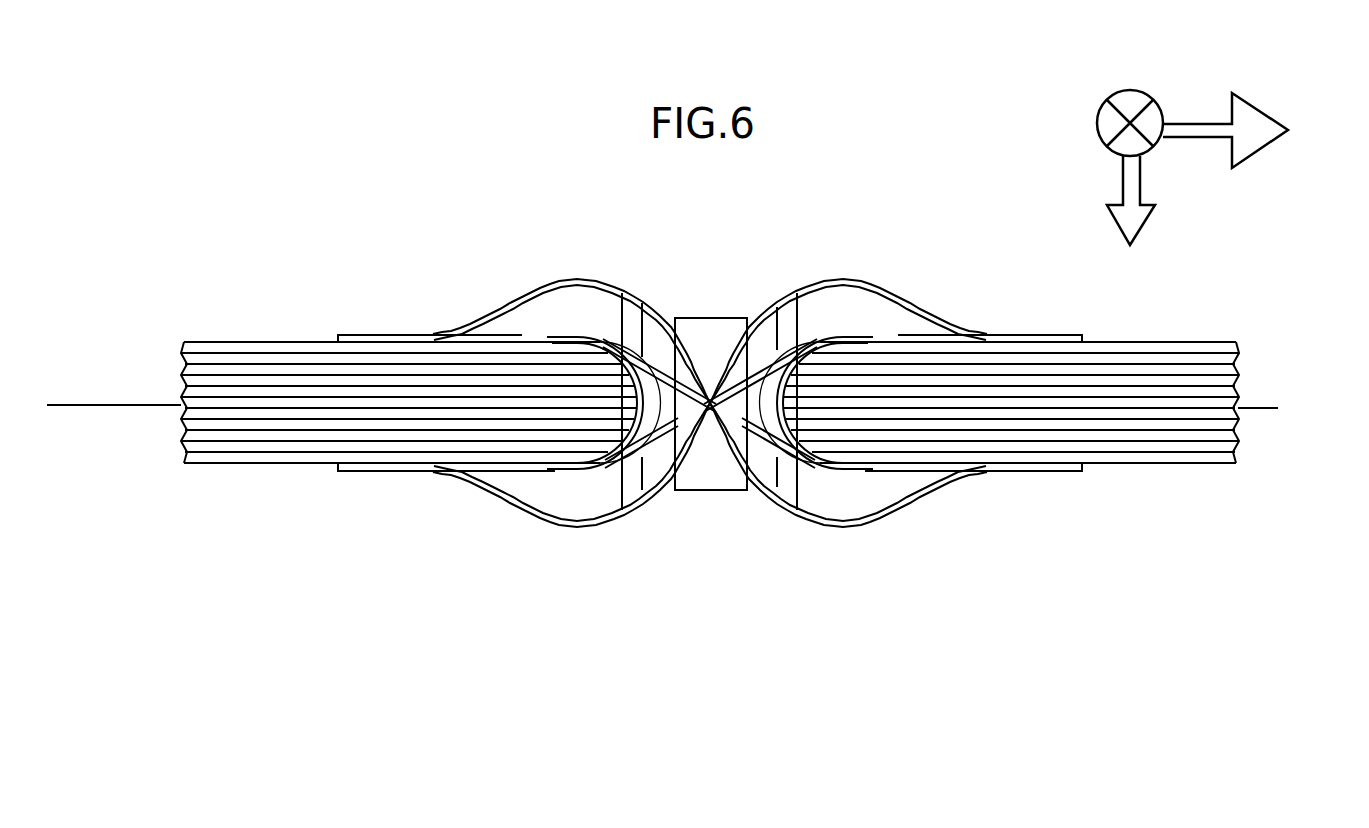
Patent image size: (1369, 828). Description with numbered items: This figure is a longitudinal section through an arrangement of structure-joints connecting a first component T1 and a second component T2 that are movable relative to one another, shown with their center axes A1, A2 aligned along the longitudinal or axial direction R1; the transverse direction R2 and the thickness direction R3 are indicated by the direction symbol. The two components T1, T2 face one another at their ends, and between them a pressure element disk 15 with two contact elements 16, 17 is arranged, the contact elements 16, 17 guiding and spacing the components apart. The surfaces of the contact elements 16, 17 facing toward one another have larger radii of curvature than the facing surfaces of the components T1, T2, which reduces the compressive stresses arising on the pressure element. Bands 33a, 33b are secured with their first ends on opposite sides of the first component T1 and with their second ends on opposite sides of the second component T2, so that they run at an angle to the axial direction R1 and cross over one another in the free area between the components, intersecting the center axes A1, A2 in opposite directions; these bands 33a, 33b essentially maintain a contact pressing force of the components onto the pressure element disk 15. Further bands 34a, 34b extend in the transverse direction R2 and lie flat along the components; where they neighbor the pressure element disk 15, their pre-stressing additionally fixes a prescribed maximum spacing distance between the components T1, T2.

The pressure element disk 15 is at (702, 343).
The contact element 16 is at (579, 507).
The contact element 17 is at (828, 507).
The band 33a is at (557, 333).
The band 33b is at (863, 333).
The band 34a is at (963, 323).
The band 34b is at (457, 323).
The first component T1 is at (237, 375).
The second component T2 is at (1183, 370).
The center axis of the first component A1 is at (93, 404).
The center axis of the second component A2 is at (1266, 408).
The longitudinal or axial direction R1 is at (1100, 123).
The transverse direction R2 is at (1256, 130).
The thickness direction R3 is at (1159, 200).